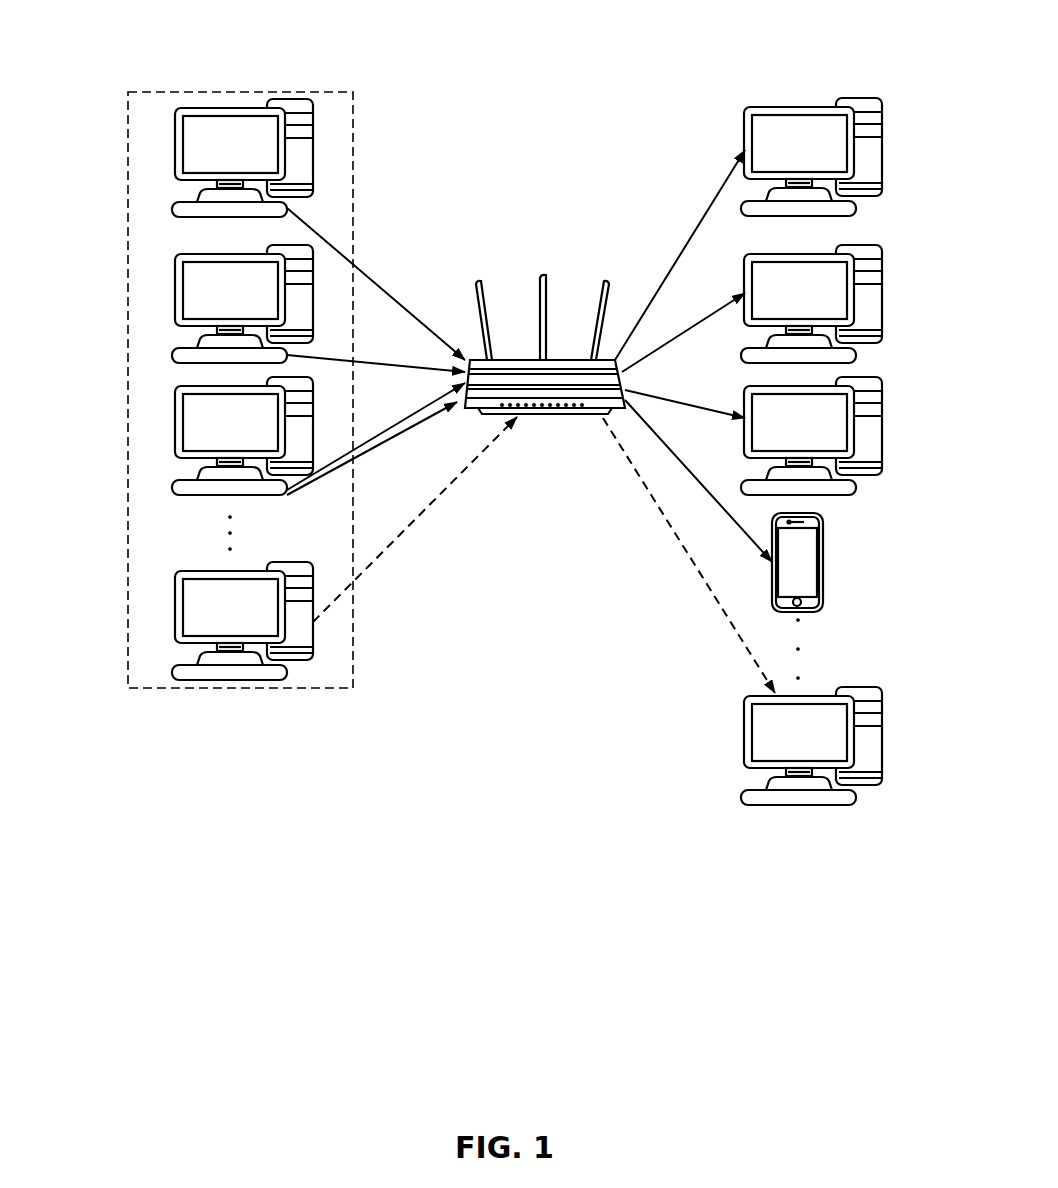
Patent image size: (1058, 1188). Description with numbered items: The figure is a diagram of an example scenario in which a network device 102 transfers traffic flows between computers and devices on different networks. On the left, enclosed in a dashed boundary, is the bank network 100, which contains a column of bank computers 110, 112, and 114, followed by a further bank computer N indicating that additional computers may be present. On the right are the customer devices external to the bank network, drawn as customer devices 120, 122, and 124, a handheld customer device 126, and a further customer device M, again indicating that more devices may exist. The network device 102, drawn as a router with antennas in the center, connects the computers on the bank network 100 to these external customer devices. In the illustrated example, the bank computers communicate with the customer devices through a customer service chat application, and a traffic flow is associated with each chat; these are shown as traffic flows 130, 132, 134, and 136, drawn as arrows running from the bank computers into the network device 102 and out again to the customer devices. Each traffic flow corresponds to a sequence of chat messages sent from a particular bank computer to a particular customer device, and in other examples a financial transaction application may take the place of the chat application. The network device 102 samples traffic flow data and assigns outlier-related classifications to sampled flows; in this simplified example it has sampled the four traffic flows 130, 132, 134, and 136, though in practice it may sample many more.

The bank network 100 is at (357, 52).
The network device 102 is at (557, 415).
The bank computer 110 is at (175, 145).
The bank computer 112 is at (175, 293).
The bank computer 114 is at (175, 425).
The Nth bank computer N is at (175, 608).
The customer device 120 is at (883, 157).
The customer device 122 is at (883, 311).
The customer device 124 is at (883, 440).
The customer device 126 is at (823, 565).
The Mth user device M is at (883, 743).
The traffic flow 130 is at (383, 290).
The traffic flow 132 is at (370, 363).
The traffic flow 134 is at (383, 432).
The traffic flow 136 is at (395, 437).